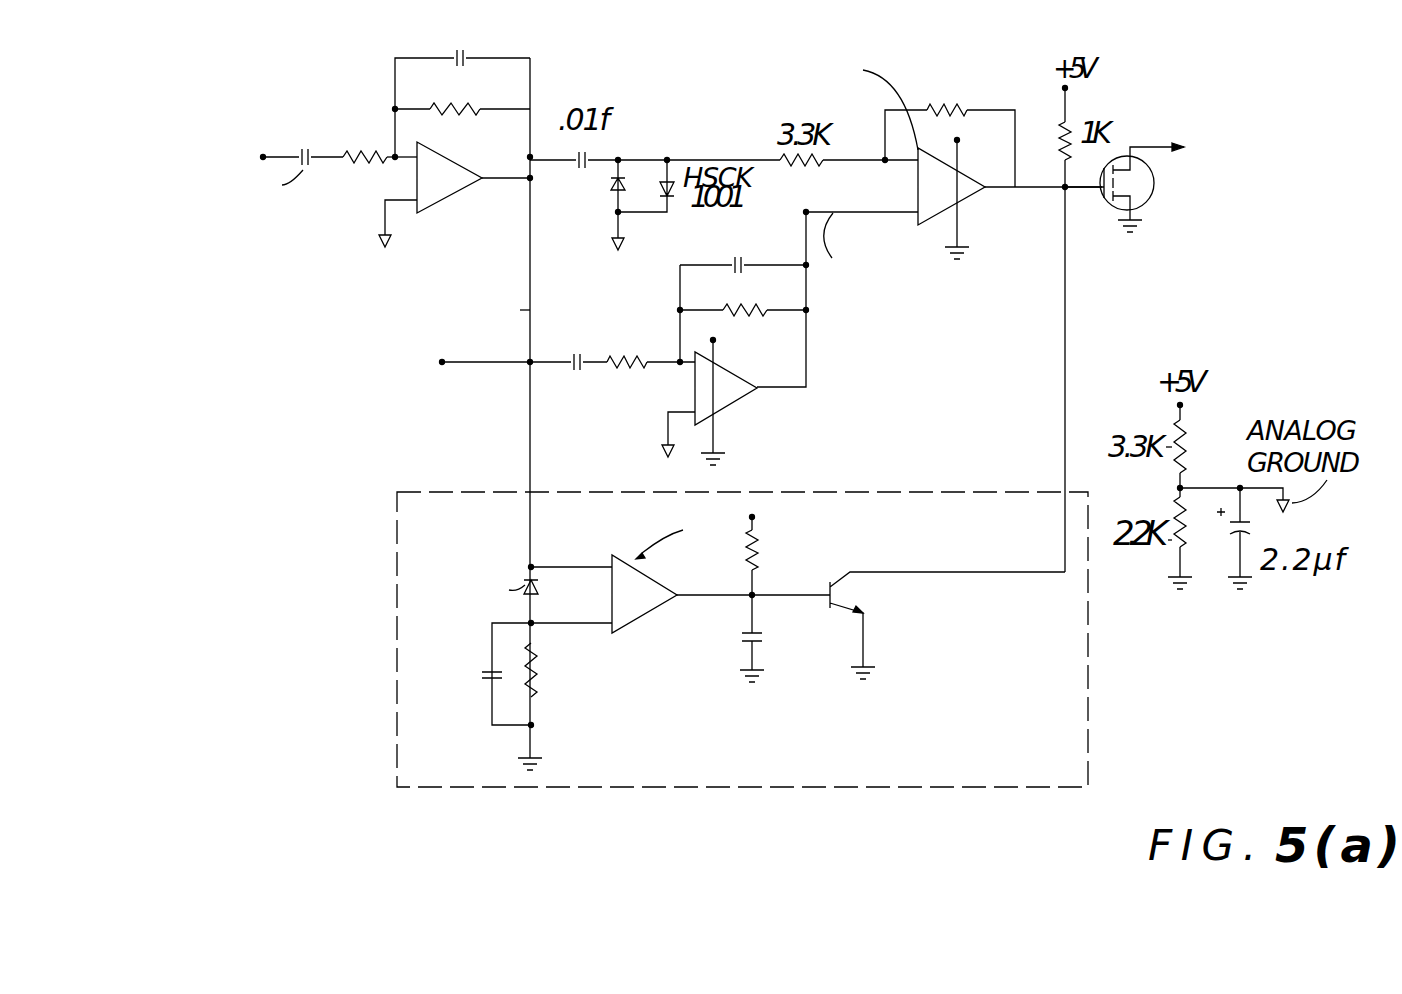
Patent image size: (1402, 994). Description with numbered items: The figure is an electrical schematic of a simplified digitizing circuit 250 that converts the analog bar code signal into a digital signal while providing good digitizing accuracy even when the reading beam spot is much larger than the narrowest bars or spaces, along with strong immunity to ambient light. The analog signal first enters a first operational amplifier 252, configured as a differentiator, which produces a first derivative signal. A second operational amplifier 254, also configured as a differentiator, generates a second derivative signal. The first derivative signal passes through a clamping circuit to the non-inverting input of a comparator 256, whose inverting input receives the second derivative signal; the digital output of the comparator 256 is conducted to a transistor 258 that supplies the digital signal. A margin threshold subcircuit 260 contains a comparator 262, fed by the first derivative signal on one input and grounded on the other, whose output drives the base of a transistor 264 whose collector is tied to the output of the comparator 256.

The digitizing circuit 250 is at (1162, 70).
The first operational amplifier 252 is at (417, 183).
The second operational amplifier 254 is at (695, 395).
The comparator 256 is at (918, 190).
The transistor 258 is at (1110, 197).
The margin threshold subcircuit 260 is at (742, 673).
The comparator 262 is at (612, 595).
The transistor 264 is at (852, 558).